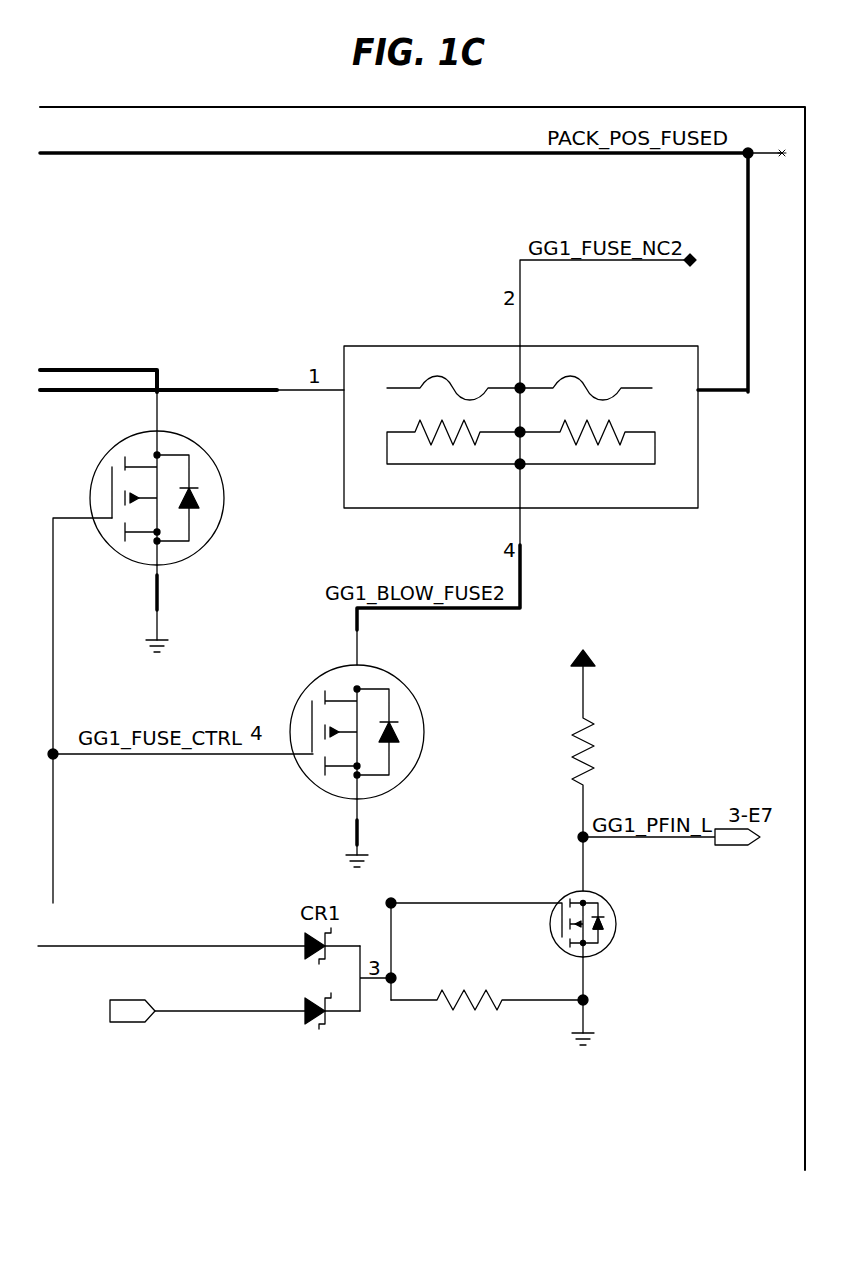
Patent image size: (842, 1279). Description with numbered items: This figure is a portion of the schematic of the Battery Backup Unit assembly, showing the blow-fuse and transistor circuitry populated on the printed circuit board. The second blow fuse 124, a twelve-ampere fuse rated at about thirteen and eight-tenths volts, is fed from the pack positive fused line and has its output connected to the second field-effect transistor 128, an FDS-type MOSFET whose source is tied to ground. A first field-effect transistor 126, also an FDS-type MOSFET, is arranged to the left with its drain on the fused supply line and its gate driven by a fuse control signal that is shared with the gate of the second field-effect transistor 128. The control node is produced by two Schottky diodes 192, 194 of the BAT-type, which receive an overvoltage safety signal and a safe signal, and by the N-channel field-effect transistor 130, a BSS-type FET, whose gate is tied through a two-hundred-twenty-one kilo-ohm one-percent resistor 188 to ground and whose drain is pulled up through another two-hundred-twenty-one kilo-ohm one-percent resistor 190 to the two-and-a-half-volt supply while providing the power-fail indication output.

The second blow fuse 124 is at (395, 347).
The first field-effect transistor 126 is at (123, 441).
The second field-effect transistor 128 is at (400, 683).
The field-effect transistor 130 is at (602, 954).
The resistor 188 is at (446, 993).
The resistor 190 is at (591, 717).
The Schottky diode 192 is at (302, 954).
The Schottky diode 194 is at (300, 1019).